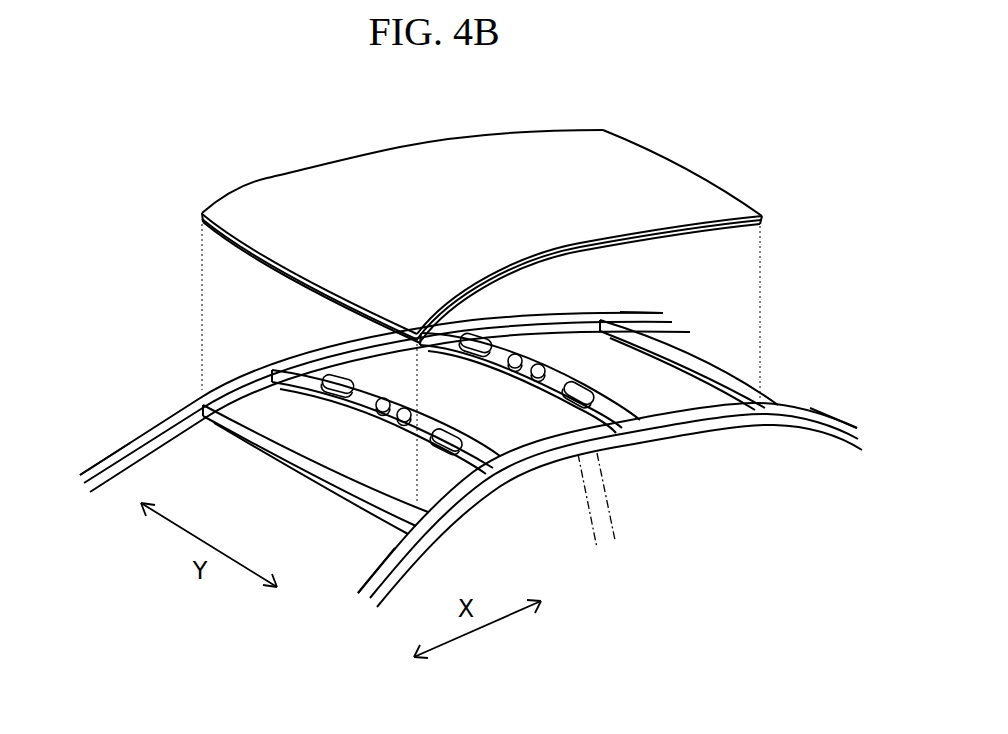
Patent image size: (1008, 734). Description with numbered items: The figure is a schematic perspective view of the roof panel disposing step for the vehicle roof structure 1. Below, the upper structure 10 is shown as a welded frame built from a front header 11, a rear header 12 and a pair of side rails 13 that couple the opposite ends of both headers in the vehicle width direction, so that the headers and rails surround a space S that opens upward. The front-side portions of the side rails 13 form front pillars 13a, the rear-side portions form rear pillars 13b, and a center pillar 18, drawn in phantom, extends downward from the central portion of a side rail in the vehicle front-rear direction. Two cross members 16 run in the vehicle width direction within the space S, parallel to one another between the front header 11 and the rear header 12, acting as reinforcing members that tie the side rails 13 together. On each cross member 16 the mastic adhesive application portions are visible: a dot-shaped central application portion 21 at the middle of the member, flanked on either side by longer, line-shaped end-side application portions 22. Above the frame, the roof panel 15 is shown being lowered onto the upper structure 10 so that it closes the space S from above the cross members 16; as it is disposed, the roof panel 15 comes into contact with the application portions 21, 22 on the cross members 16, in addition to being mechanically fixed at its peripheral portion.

The vehicle roof structure 1 is at (96, 160).
The upper structure 10 is at (184, 319).
The front header 11 is at (262, 440).
The rear header 12 is at (690, 344).
The side rail 13 is at (700, 416).
The front pillar 13a is at (126, 448).
The rear pillar 13b is at (634, 316).
The roof panel 15 is at (668, 168).
The cross member 16 is at (367, 400).
The center pillar 18 is at (612, 524).
The central application portion 21 is at (404, 420).
The end-side application portion 22 is at (334, 388).
The space S is at (452, 410).